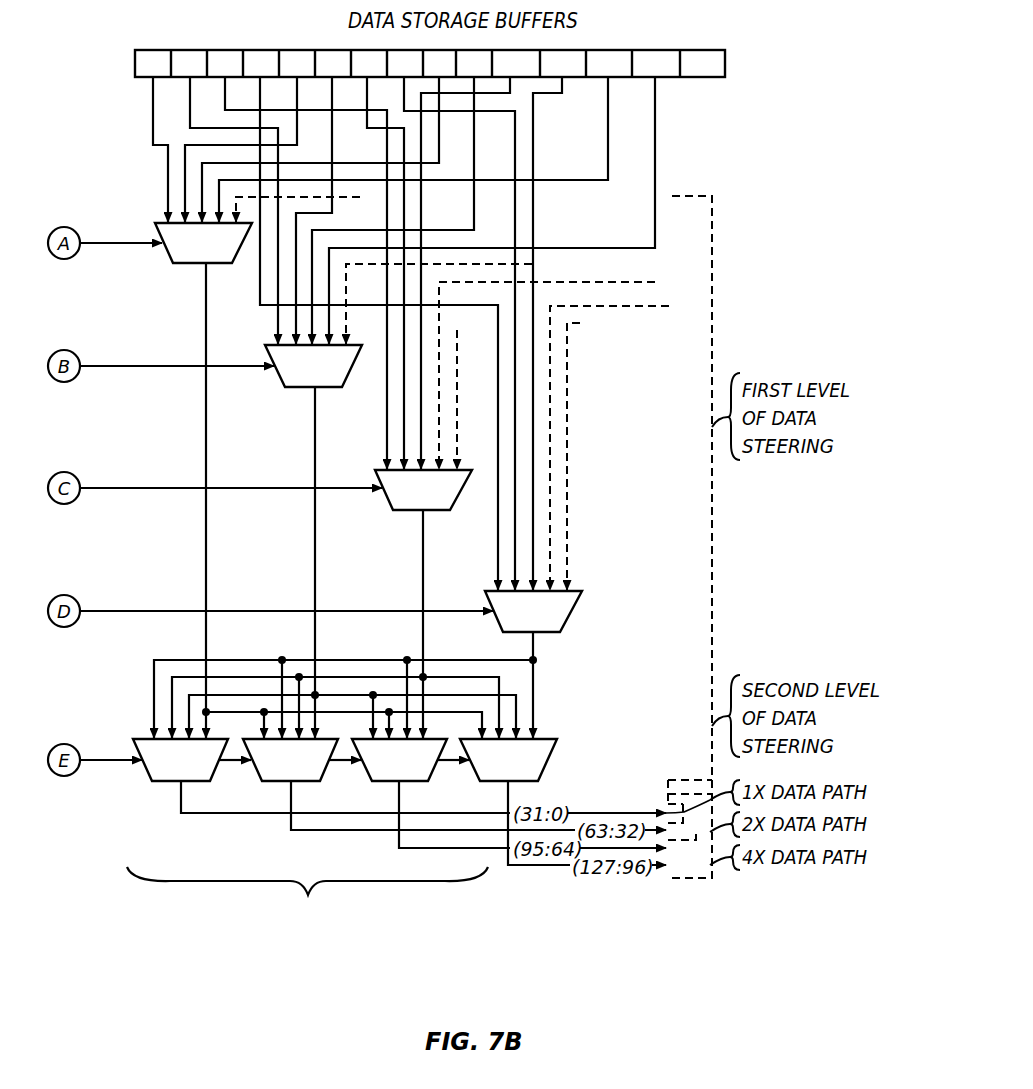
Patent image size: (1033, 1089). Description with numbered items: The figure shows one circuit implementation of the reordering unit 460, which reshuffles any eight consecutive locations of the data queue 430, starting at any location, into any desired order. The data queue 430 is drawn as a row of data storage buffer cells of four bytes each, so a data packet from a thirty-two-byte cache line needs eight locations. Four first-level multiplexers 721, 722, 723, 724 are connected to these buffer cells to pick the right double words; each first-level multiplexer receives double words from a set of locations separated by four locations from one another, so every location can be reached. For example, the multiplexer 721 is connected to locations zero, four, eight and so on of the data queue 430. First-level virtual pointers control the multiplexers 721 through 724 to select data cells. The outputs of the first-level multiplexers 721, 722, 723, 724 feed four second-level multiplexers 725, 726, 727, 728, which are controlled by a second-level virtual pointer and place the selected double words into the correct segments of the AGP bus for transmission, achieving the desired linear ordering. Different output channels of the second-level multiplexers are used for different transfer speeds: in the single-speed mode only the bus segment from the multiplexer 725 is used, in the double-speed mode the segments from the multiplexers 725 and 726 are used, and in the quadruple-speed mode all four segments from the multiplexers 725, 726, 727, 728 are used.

The data queue 430 is at (645, 50).
The first-level multiplexer 721 is at (183, 266).
The first-level multiplexer 722 is at (297, 390).
The first-level multiplexer 723 is at (407, 513).
The first-level multiplexer 724 is at (515, 634).
The second-level multiplexer 725 is at (170, 784).
The second-level multiplexer 726 is at (280, 784).
The second-level multiplexer 727 is at (390, 784).
The second-level multiplexer 728 is at (500, 784).
The reordering unit 460 is at (307, 896).